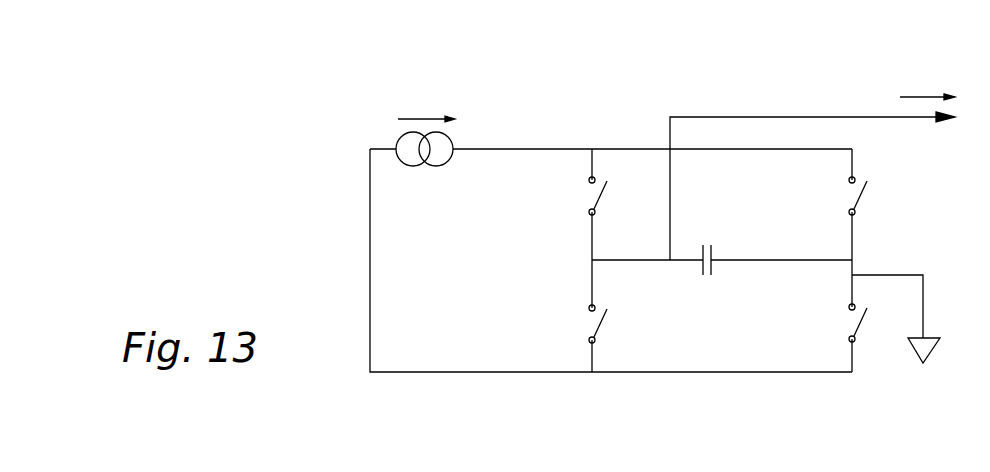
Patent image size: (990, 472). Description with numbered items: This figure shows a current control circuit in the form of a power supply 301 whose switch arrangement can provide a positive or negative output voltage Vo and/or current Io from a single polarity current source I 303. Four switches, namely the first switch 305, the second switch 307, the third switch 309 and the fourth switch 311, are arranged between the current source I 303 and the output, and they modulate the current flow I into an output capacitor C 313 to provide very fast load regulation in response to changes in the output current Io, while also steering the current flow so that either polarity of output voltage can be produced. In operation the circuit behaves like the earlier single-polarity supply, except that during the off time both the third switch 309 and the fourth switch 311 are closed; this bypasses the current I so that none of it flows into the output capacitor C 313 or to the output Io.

The power supply 301 is at (343, 140).
The current source I 303 is at (433, 173).
The switch S1 305 is at (580, 203).
The switch S2 307 is at (582, 342).
The switch S3 309 is at (873, 190).
The switch S4 311 is at (868, 328).
The output capacitor C 313 is at (723, 273).